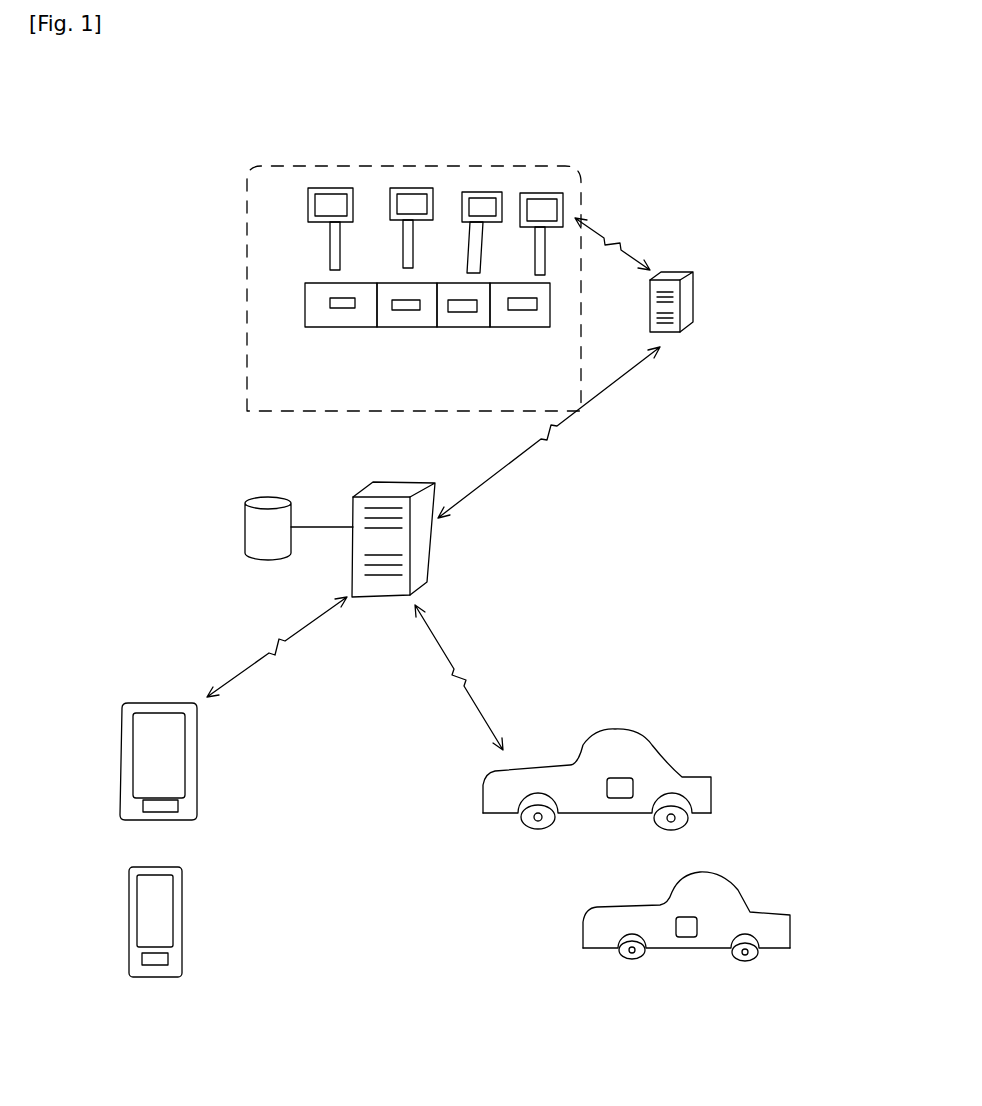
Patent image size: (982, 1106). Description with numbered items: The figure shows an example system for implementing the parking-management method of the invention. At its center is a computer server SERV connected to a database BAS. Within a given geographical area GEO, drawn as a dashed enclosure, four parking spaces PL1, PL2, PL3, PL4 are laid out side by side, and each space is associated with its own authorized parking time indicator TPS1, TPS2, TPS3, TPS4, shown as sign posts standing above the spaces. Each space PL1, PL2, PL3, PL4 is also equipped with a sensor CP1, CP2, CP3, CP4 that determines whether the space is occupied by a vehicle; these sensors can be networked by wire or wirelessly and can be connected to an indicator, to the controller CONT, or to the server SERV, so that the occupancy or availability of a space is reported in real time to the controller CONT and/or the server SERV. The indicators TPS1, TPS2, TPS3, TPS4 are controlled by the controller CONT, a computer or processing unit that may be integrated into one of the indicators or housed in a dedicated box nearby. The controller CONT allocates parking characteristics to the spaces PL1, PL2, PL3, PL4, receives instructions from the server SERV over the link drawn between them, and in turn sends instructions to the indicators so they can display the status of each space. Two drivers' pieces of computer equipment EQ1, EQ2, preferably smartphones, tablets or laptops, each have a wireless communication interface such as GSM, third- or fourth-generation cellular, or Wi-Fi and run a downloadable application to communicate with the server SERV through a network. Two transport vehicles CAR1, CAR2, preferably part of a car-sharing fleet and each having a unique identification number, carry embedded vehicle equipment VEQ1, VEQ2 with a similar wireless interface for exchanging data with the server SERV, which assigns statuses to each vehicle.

The geographical area GEO is at (581, 172).
The authorized parking time indicator TPS1 is at (322, 190).
The authorized parking time indicator TPS2 is at (405, 188).
The authorized parking time indicator TPS3 is at (478, 192).
The authorized parking time indicator TPS4 is at (538, 195).
The parking space PL1 is at (322, 327).
The parking space PL2 is at (397, 327).
The parking space PL3 is at (467, 327).
The parking space PL4 is at (520, 327).
The sensor CP1 is at (347, 287).
The sensor CP2 is at (417, 288).
The sensor CP3 is at (473, 289).
The sensor CP4 is at (533, 290).
The controller CONT is at (693, 300).
The computer server SERV is at (428, 560).
The database BAS is at (245, 530).
The computer equipment EQ1 is at (197, 763).
The computer equipment EQ2 is at (182, 920).
The transport vehicle CAR1 is at (712, 790).
The transport vehicle CAR2 is at (790, 930).
The vehicle equipment VEQ1 is at (613, 799).
The vehicle equipment VEQ2 is at (686, 940).